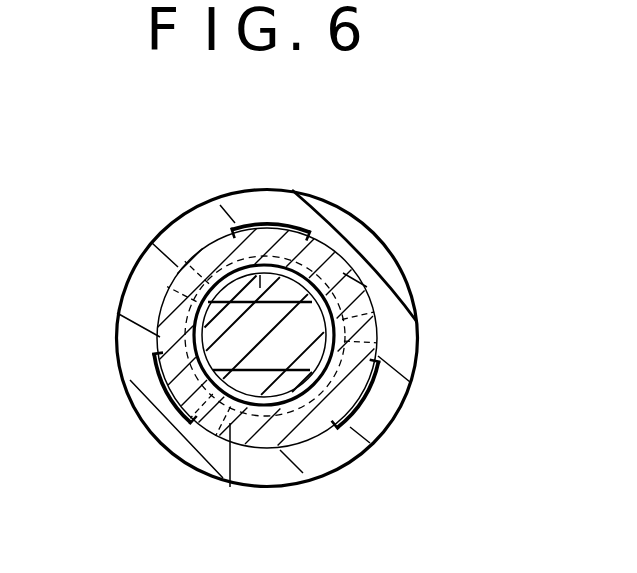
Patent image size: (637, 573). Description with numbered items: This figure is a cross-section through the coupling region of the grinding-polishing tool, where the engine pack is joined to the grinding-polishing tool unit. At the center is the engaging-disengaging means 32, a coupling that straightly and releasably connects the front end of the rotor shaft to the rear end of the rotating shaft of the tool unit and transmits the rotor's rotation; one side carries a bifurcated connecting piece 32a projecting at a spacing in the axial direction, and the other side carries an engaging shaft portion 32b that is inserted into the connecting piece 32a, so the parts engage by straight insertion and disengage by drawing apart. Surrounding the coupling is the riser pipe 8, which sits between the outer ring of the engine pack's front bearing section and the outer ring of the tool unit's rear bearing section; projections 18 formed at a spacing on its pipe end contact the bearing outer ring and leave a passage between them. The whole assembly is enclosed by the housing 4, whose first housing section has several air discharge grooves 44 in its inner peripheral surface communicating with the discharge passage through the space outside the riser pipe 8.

The housing 4 is at (381, 252).
The riser pipe 8 is at (362, 283).
The projections 18 is at (182, 248).
The engaging-disengaging means 32 is at (310, 437).
The connecting piece 32a is at (260, 283).
The engaging shaft portion 32b is at (370, 303).
The air discharge grooves 44 is at (312, 222).